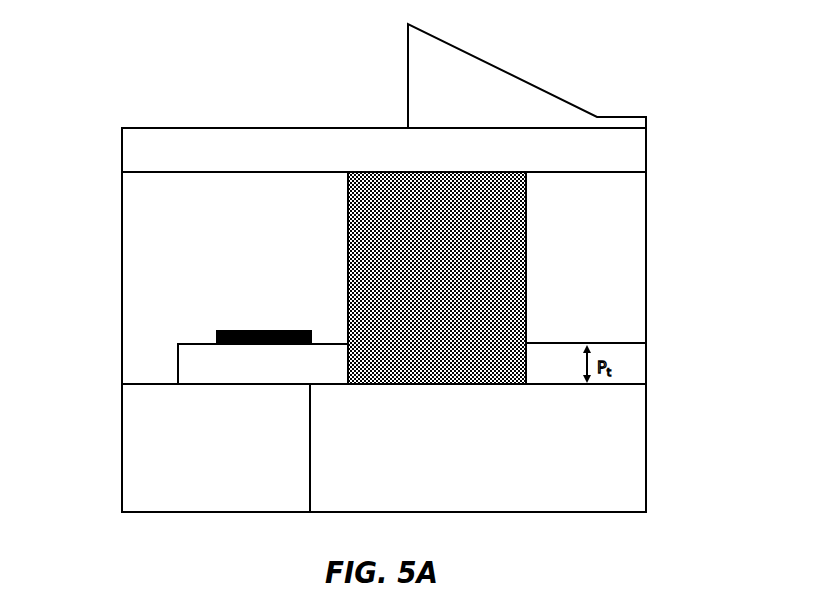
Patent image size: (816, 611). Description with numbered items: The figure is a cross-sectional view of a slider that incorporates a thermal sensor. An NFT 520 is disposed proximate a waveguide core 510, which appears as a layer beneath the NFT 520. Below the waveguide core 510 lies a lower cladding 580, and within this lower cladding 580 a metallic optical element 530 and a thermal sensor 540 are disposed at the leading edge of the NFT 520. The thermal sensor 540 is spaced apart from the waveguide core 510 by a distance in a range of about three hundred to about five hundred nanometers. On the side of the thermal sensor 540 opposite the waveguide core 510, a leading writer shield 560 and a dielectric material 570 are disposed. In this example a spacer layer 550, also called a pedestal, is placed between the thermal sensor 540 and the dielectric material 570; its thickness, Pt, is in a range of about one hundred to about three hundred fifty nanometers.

The waveguide core 510 is at (163, 140).
The NFT 520 is at (433, 45).
The metallic optical element 530 is at (360, 252).
The thermal sensor 540 is at (267, 330).
The spacer layer 550 is at (193, 347).
The leading writer shield 560 is at (625, 483).
The dielectric material 570 is at (138, 463).
The lower cladding 580 is at (143, 237).